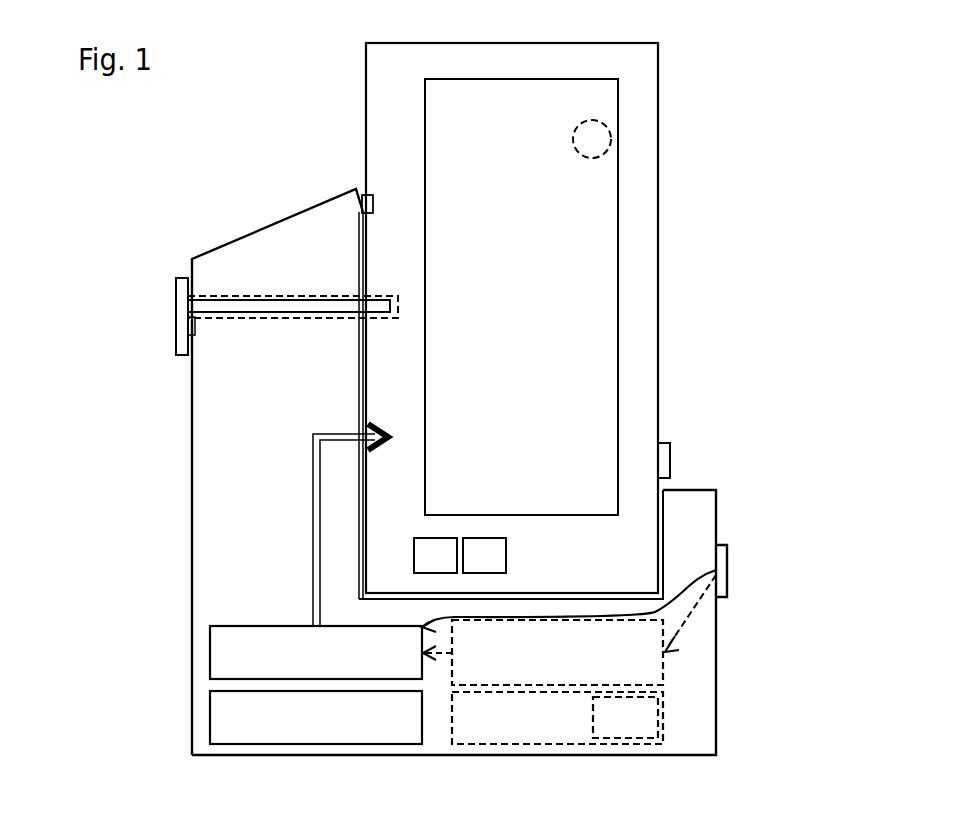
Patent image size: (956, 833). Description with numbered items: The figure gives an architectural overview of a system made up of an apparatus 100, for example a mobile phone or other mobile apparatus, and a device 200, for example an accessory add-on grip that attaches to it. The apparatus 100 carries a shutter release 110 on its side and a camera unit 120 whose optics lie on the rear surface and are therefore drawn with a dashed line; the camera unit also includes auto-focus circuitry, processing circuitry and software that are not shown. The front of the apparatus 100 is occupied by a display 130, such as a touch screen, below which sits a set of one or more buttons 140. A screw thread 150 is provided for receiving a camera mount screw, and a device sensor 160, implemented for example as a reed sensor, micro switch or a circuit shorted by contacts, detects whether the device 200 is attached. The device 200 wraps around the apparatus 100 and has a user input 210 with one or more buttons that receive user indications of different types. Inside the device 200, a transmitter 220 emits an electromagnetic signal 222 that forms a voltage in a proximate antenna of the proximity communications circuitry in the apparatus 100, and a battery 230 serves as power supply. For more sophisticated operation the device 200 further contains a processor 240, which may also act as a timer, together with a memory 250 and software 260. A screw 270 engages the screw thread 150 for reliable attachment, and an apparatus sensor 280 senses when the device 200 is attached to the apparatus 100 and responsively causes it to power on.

The apparatus 100 is at (366, 78).
The shutter release 110 is at (663, 440).
The camera unit 120 is at (610, 137).
The display 130 is at (618, 378).
The buttons 140 is at (468, 526).
The screw thread 150 is at (390, 295).
The device sensor 160 is at (373, 200).
The device 200 is at (716, 690).
The user input 210 is at (728, 570).
The transmitter 220 is at (210, 650).
The electromagnetic signal 222 is at (313, 507).
The battery 230 is at (210, 722).
The processor 240 is at (450, 668).
The memory 250 is at (528, 743).
The software 260 is at (622, 737).
The screw 270 is at (178, 300).
The apparatus sensor 280 is at (195, 332).